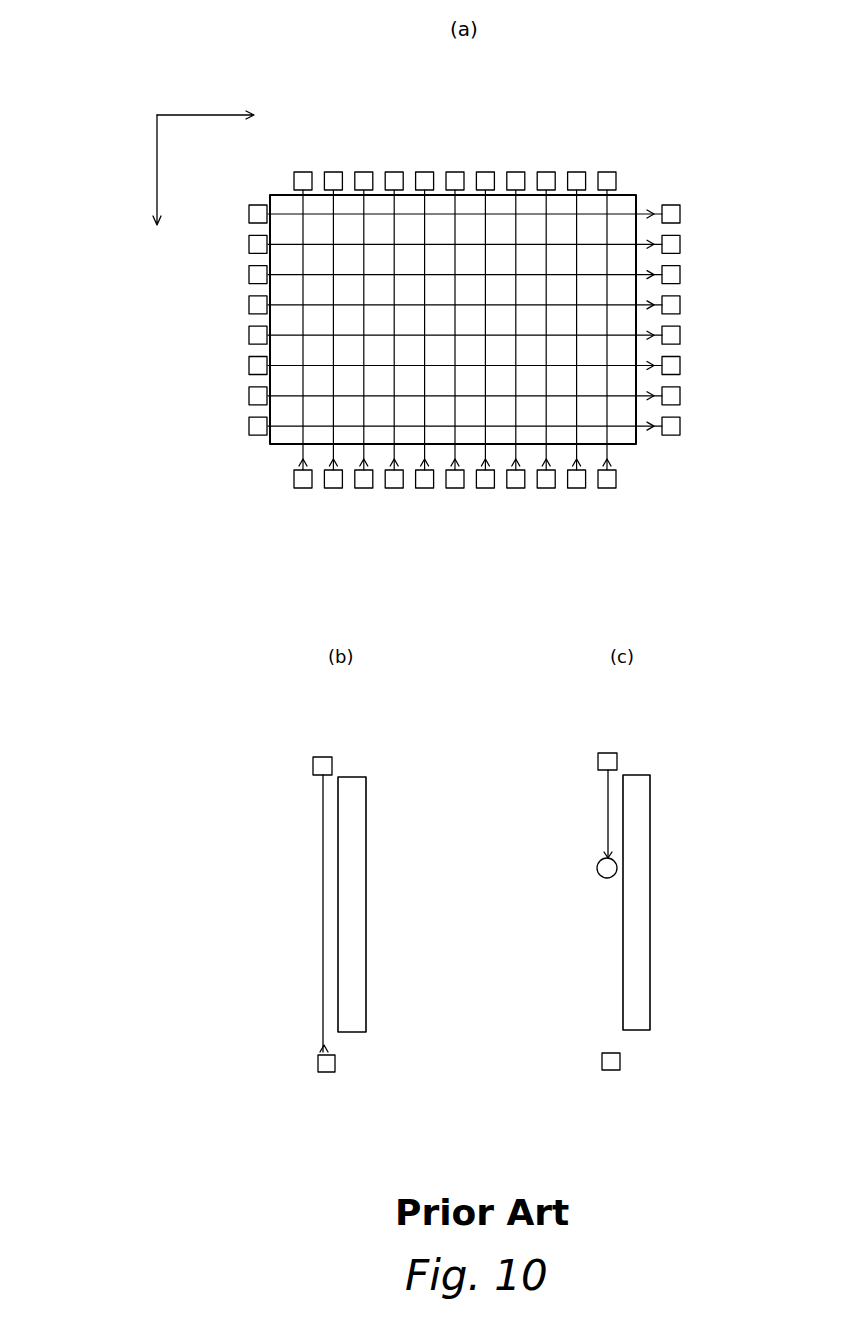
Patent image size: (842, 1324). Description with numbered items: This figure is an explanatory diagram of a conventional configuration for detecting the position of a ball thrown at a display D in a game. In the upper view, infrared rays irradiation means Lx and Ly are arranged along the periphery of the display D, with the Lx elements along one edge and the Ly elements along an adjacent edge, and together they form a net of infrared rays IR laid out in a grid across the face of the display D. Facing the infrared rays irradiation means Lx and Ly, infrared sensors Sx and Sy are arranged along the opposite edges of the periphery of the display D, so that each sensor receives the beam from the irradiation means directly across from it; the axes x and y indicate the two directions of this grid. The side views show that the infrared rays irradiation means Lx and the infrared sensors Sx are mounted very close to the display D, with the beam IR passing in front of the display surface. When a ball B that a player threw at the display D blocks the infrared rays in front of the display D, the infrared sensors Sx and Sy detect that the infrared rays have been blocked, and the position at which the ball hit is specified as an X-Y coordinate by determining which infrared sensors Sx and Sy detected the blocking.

The display D is at (636, 195).
The infrared rays irradiation means Lx is at (612, 152).
The infrared rays irradiation means Ly is at (237, 205).
The infrared sensor Sx is at (620, 497).
The infrared sensor Sy is at (690, 198).
The infrared light beam IR is at (648, 206).
The blocking object (finger) B is at (597, 868).
The x axis x is at (216, 116).
The y axis y is at (156, 182).